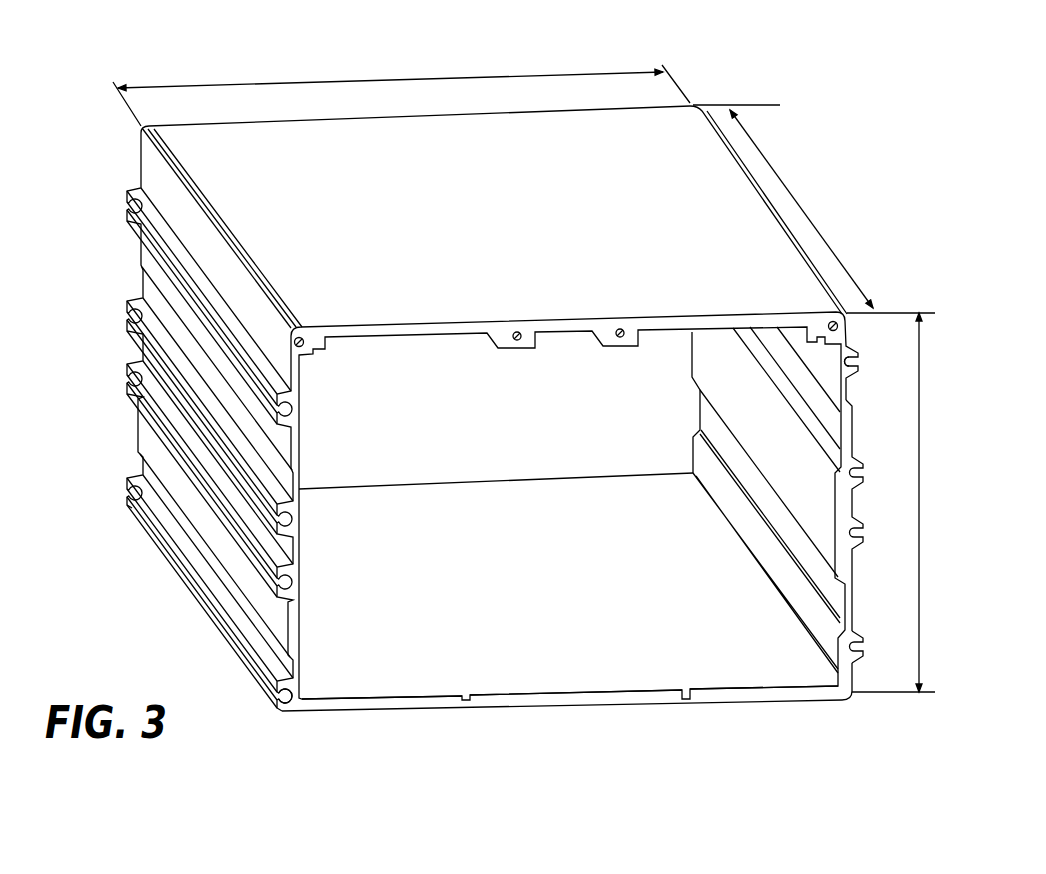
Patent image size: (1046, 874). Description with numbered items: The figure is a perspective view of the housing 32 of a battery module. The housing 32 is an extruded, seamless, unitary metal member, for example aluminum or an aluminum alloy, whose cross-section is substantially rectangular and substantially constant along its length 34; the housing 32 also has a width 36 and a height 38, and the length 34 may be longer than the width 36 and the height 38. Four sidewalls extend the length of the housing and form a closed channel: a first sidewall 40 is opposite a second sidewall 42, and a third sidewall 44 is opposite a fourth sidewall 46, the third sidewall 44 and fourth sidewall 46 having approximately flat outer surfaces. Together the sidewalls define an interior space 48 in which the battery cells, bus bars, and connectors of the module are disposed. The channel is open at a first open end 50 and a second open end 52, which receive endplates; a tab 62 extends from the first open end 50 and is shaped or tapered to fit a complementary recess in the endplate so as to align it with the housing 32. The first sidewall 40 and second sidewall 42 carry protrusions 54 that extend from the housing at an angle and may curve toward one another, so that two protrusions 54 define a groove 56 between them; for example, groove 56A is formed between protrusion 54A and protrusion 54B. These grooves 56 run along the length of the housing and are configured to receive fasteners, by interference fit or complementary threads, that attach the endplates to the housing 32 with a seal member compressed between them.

The housing 32 is at (113, 166).
The length 34 is at (833, 246).
The width 36 is at (358, 80).
The height 38 is at (925, 560).
The first sidewall 40 is at (146, 437).
The second sidewall 42 is at (857, 452).
The third sidewall 44 is at (222, 138).
The fourth sidewall 46 is at (427, 700).
The interior space 48 is at (499, 444).
The first open end 50 is at (362, 329).
The second open end 52 is at (560, 111).
The protrusion 54 is at (858, 358).
The protrusion 54A is at (860, 670).
The protrusion 54B is at (860, 643).
The groove 56 is at (855, 362).
The groove 56A is at (862, 650).
The tab 62 is at (614, 702).